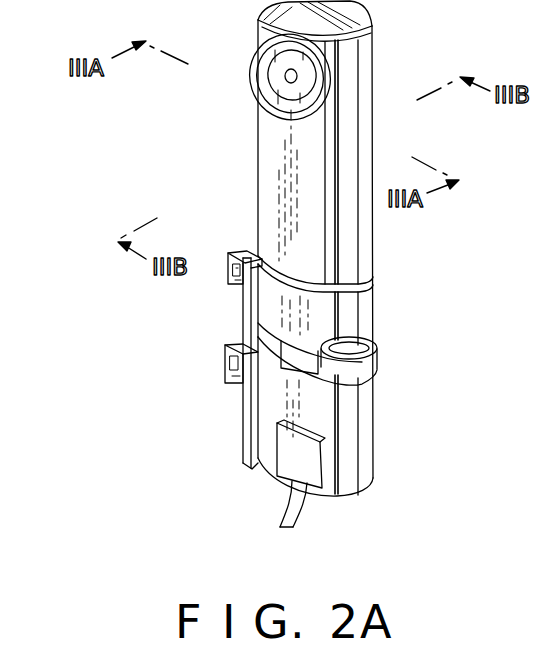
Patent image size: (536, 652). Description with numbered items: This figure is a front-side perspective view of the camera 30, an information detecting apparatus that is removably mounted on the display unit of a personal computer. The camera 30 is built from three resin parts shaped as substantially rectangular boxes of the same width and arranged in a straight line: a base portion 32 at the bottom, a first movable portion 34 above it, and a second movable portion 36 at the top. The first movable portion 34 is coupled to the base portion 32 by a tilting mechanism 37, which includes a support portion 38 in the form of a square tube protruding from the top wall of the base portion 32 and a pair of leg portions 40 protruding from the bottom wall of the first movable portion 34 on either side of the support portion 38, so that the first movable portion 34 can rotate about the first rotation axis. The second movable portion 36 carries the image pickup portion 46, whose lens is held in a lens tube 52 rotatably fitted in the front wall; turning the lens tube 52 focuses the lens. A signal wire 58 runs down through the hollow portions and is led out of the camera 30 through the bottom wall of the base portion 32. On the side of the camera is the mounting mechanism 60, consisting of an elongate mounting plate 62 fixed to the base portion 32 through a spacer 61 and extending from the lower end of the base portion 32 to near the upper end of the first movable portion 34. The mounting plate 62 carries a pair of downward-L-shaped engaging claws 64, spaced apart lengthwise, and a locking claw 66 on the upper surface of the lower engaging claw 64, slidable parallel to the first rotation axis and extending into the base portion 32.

The camera 30 is at (384, 79).
The base portion 32 is at (372, 448).
The first movable portion 34 is at (372, 308).
The second movable portion 36 is at (372, 254).
The tilting mechanism 37 is at (384, 359).
The support portion 38 is at (372, 341).
The leg portions 40 is at (372, 374).
The image pickup portion 46 is at (249, 56).
The lens tube 52 is at (252, 88).
The signal wire 58 is at (303, 516).
The mounting mechanism 60 is at (235, 319).
The spacer 61 is at (251, 470).
The mounting plate 62 is at (243, 441).
The engaging claws 64 is at (236, 252).
The locking claw 66 is at (226, 348).